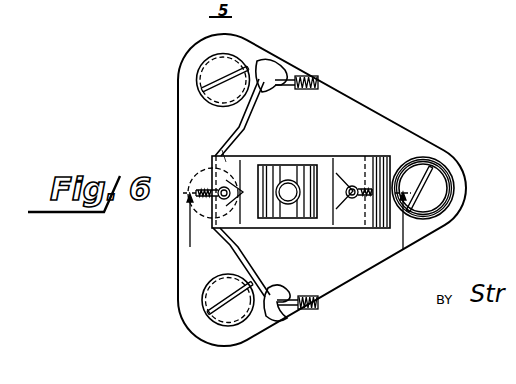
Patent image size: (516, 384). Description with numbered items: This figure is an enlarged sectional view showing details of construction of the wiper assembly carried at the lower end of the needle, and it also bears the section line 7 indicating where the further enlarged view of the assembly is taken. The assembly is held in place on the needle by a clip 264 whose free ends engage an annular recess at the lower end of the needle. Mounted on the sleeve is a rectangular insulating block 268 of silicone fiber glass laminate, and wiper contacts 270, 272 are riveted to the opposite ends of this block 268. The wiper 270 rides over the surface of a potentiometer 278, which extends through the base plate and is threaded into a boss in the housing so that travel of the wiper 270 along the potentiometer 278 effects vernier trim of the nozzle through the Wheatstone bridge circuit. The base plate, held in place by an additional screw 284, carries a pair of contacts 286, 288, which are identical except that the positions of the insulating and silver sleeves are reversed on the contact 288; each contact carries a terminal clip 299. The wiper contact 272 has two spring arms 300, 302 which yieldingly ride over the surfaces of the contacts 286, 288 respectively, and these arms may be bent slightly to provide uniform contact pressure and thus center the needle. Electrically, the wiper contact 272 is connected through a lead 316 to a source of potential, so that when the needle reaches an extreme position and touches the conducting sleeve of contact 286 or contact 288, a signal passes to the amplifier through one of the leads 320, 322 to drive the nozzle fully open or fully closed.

The section line 7- 7 is at (297, 222).
The clip 264 is at (313, 220).
The insulating block 268 is at (322, 158).
The wiper contact 270 is at (381, 156).
The wiper contact 272 is at (213, 153).
The potentiometer 278 is at (437, 172).
The screw 284 is at (200, 180).
The contact 286 is at (205, 61).
The contact 288 is at (198, 301).
The terminal clip 299 is at (262, 64).
The spring arm 300 is at (242, 136).
The spring arm 302 is at (236, 248).
The lead 316 is at (223, 160).
The lead 320 is at (309, 74).
The lead 322 is at (311, 296).